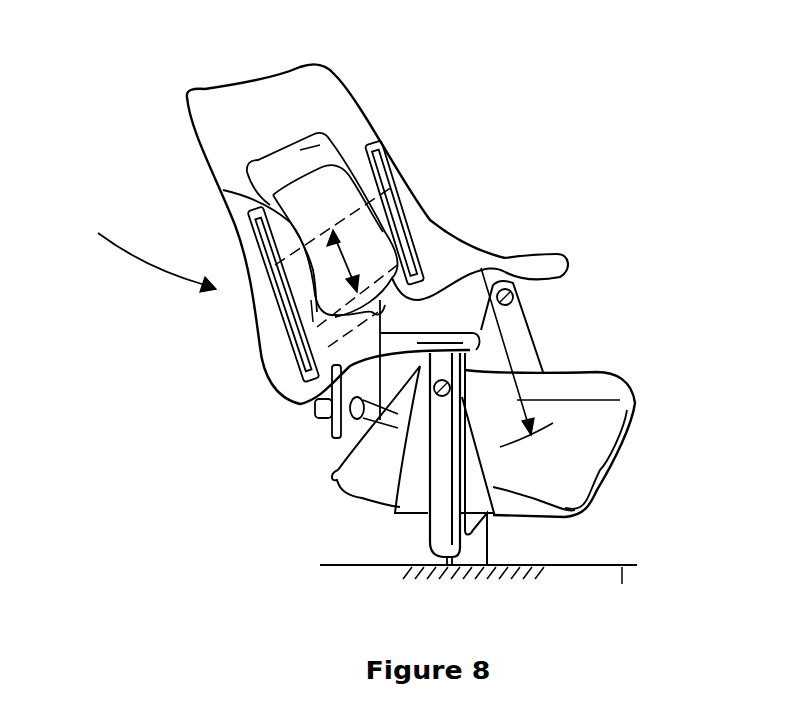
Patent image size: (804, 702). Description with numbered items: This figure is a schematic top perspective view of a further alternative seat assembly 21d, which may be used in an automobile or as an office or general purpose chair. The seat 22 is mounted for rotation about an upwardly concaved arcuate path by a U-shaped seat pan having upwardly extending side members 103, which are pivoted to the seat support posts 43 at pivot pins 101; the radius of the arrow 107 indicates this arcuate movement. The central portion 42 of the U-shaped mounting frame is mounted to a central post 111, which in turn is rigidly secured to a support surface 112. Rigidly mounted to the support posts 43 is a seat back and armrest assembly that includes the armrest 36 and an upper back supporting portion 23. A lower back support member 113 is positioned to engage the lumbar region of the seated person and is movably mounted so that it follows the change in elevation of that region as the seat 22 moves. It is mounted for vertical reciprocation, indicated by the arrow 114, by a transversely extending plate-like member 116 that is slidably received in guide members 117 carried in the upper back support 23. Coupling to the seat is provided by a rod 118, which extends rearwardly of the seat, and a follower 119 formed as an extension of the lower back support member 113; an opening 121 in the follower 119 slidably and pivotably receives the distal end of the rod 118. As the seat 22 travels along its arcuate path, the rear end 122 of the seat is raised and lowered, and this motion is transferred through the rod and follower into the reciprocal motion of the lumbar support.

The upper back supporting portion 23 is at (273, 103).
The lower back support member 113 is at (317, 200).
The arrow indicating vertical reciprocation 114 is at (331, 254).
The guide members 117 is at (390, 172).
The transversely extending plate-like member 116 is at (230, 192).
The seat assembly 21d is at (138, 245).
The armrest 36 is at (553, 255).
The pivot pins 101 is at (514, 293).
The side members 103 is at (513, 330).
The seat 22 is at (603, 383).
The arrow indicating arcuate movement 107 is at (620, 400).
The seat support posts 43 is at (443, 515).
The central portion of U-shaped mounting frame 42 is at (473, 530).
The central post 111 is at (473, 557).
The support surface 112 is at (622, 591).
The rod 118 is at (316, 407).
The follower 119 is at (347, 427).
The opening 121 is at (377, 420).
The rear end of the seat 122 is at (337, 480).